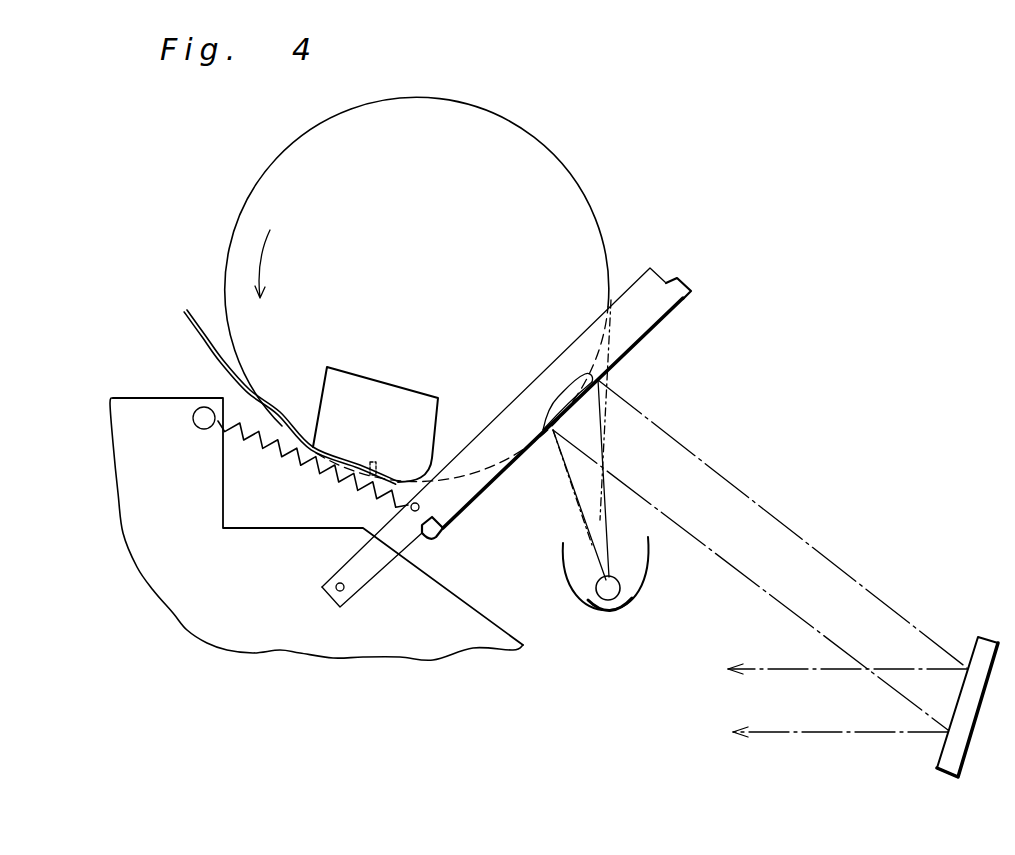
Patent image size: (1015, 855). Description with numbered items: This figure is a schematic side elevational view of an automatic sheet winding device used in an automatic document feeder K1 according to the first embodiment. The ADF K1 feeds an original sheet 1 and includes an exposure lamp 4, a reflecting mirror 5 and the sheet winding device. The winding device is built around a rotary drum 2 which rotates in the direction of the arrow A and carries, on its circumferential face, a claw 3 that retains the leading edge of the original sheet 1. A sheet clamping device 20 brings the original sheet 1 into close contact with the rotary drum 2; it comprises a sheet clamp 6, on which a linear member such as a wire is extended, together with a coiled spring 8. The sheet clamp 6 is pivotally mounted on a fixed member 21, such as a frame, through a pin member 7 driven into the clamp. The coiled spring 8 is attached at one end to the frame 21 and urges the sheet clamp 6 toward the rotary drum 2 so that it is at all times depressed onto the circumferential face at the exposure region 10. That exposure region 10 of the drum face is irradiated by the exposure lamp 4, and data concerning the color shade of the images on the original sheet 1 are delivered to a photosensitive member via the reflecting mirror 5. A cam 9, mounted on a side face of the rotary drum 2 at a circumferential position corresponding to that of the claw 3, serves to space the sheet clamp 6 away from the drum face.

The original sheet 1 is at (216, 345).
The rotary drum 2 is at (530, 168).
The claw 3 is at (372, 472).
The exposure lamp 4 is at (605, 590).
The reflecting mirror 5 is at (985, 648).
The sheet clamp 6 is at (660, 276).
The pin member 7 is at (345, 592).
The coiled spring 8 is at (256, 437).
The cam 9 is at (335, 428).
The exposure region 10 is at (562, 393).
The sheet clamping device 20 is at (654, 360).
The fixed member 21 is at (132, 413).
The automatic document feeder K1 is at (788, 297).
The direction of rotation A is at (270, 248).